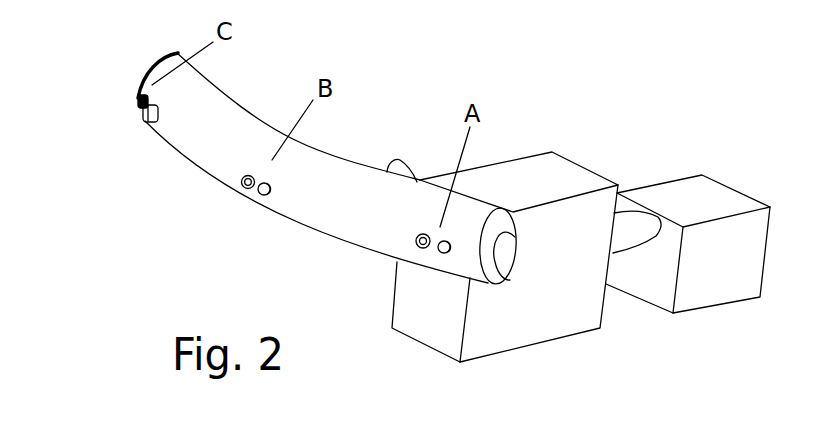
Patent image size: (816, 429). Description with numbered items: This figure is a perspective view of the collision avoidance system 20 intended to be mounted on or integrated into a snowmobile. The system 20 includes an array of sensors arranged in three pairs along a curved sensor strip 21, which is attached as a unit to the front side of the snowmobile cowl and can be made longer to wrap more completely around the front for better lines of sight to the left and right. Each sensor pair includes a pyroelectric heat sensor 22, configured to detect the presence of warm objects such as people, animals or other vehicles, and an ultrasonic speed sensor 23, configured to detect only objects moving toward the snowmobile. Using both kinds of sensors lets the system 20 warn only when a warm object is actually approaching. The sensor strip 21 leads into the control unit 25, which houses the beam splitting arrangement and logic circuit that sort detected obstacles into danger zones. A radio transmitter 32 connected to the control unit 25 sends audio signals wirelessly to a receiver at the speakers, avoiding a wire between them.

The collision avoidance system 20 is at (143, 257).
The sensor strip 21 is at (212, 115).
The pyroelectric heat sensor 22 is at (147, 122).
The ultrasonic speed sensor 23 is at (136, 107).
The control unit 25 is at (523, 170).
The radio transmitter 32 is at (688, 187).